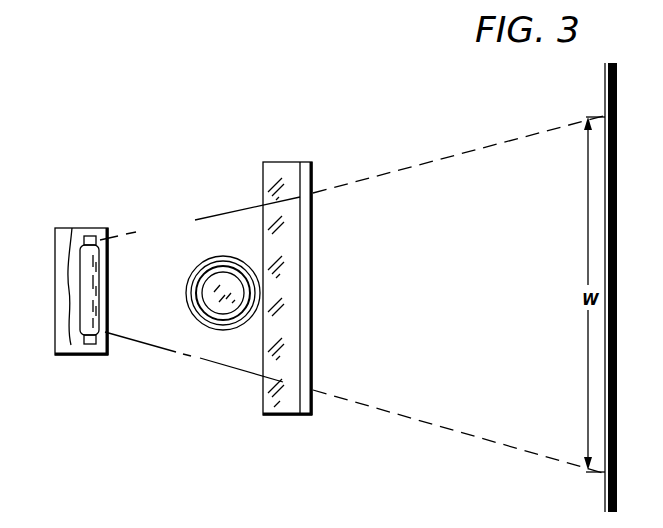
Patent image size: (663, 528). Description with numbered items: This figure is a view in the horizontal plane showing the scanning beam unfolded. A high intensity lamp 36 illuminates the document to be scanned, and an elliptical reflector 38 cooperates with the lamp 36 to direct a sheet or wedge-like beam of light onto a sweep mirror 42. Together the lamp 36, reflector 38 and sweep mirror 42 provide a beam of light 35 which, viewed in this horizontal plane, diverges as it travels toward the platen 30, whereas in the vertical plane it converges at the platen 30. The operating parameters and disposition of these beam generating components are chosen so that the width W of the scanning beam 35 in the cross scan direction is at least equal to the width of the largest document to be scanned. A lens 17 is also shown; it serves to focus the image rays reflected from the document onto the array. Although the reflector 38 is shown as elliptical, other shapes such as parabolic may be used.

The platen 30 is at (605, 91).
The beam of light 35 is at (200, 221).
The sweep mirror 42 is at (303, 239).
The lens 17 is at (196, 277).
The elliptical reflector 38 is at (73, 228).
The lamp 36 is at (85, 346).